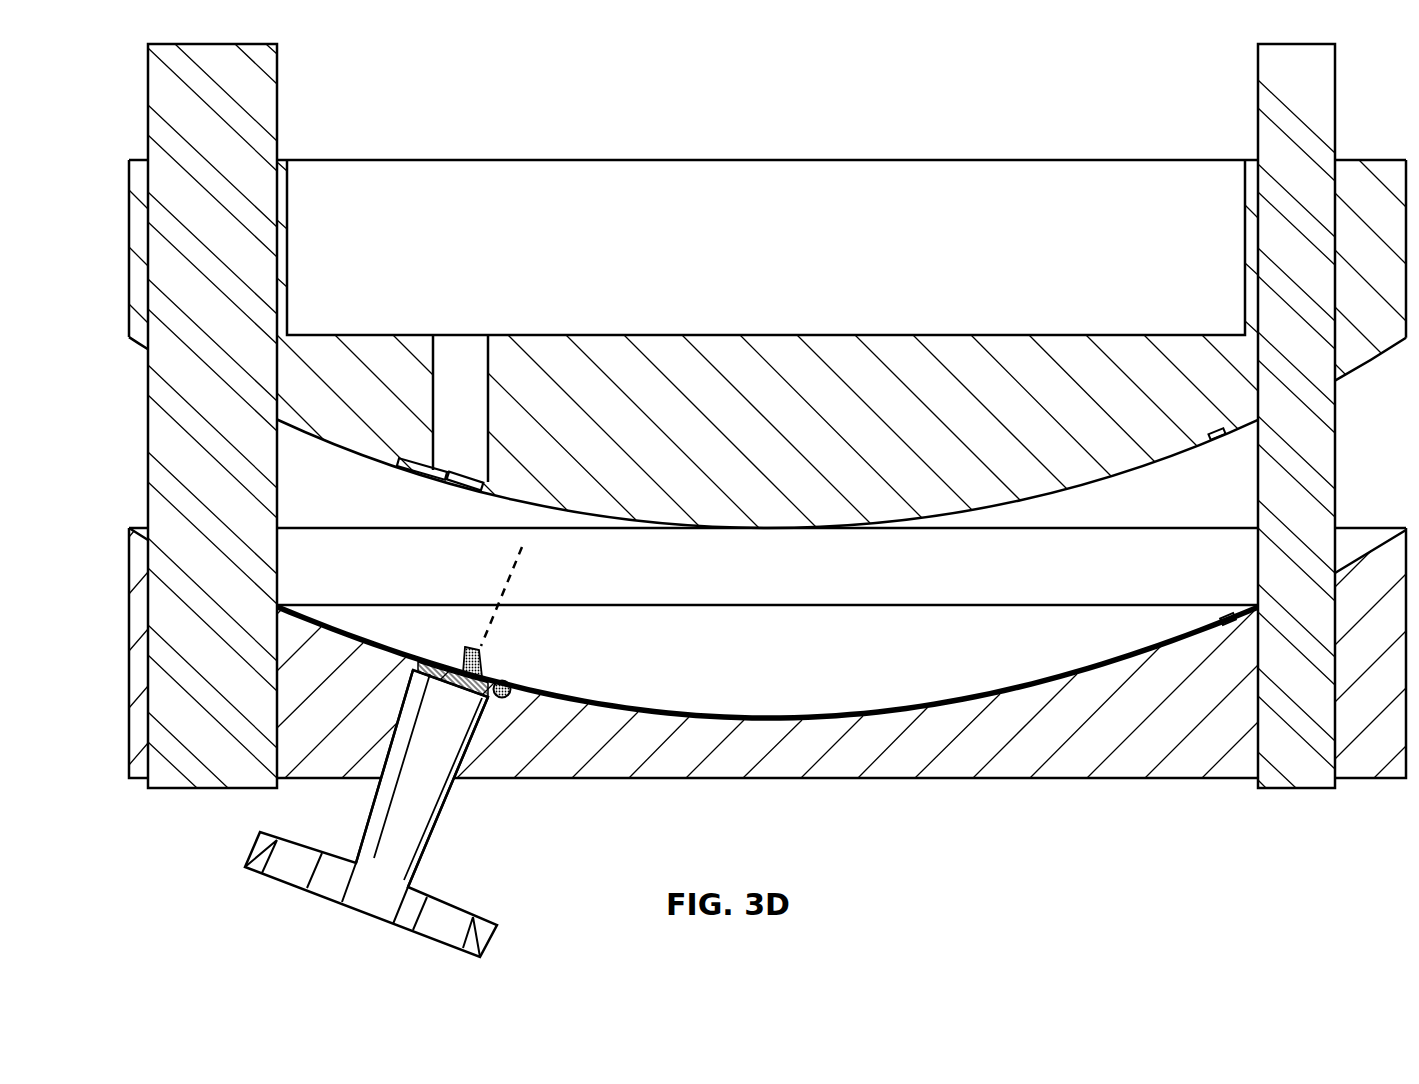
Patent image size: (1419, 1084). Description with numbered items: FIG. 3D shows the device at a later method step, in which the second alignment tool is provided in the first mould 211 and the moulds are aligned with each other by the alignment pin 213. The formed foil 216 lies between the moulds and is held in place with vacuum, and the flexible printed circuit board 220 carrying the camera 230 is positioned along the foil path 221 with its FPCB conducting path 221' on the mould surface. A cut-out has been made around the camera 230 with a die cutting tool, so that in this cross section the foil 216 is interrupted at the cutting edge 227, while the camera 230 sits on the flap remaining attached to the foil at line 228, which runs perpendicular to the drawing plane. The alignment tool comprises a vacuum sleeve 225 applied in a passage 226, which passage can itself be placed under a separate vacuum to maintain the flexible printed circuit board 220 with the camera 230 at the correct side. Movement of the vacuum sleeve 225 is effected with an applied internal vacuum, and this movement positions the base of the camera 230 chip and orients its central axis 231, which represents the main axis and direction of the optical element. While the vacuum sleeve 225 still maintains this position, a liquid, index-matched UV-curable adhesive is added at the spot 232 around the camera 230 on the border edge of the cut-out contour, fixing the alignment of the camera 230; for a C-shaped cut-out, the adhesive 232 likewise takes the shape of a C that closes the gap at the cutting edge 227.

The first mould 211 is at (1130, 760).
The alignment pin 213 is at (1296, 762).
The foil 216 is at (993, 697).
The flexible printed circuit board 220 is at (449, 660).
The hole for opto-electronic element 221 is at (1156, 269).
The FPCB conducting path 221' is at (1204, 734).
The vacuum sleeve 225 is at (458, 788).
The passage 226 is at (390, 757).
The cutting edge 227 is at (485, 700).
The foil flap/cut-out 228 is at (412, 656).
The camera 230 is at (481, 647).
The central axis 231 is at (522, 547).
The liquid adhesive spot 232 is at (512, 700).